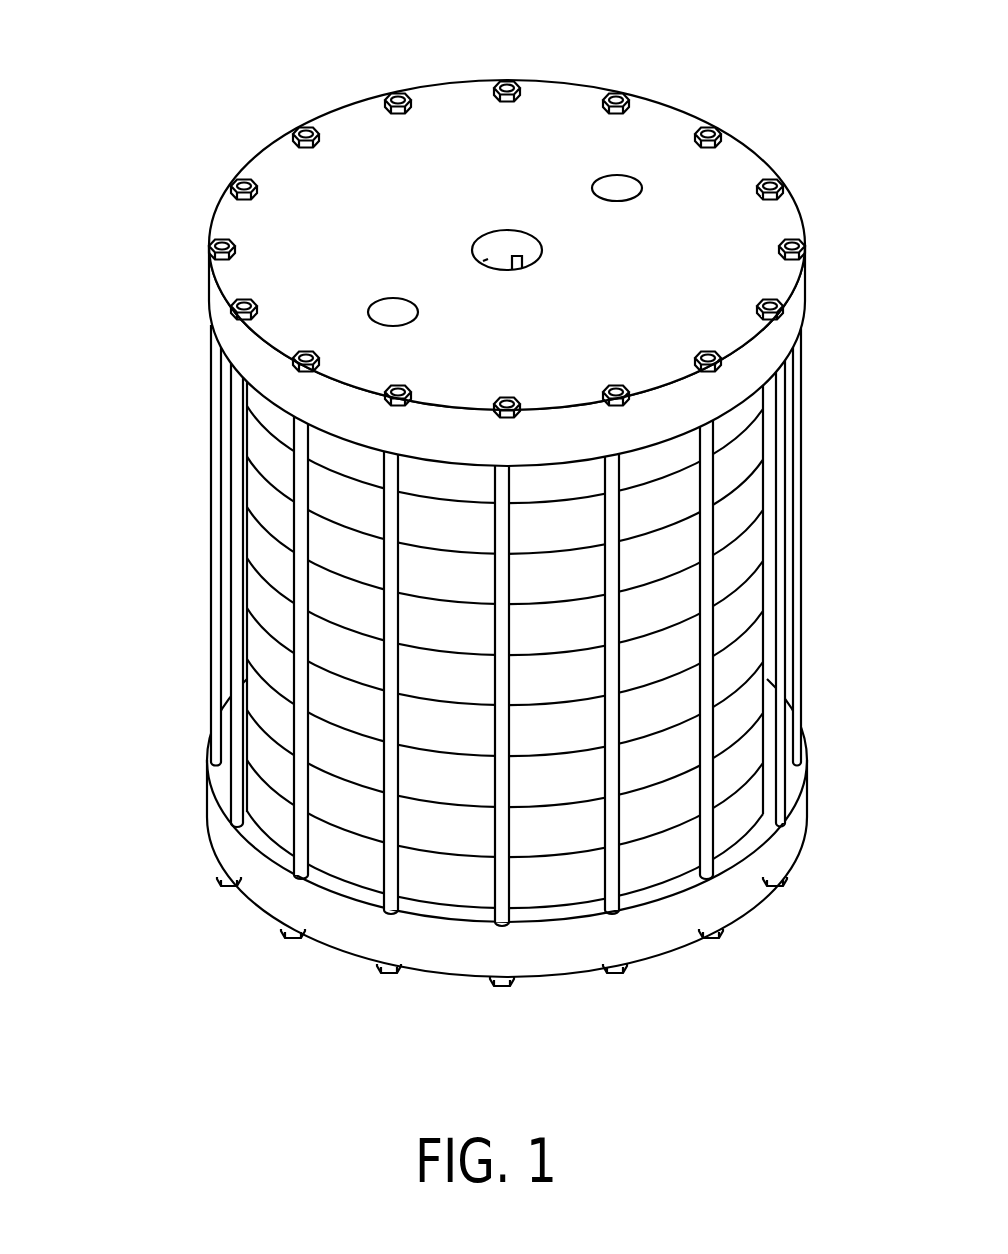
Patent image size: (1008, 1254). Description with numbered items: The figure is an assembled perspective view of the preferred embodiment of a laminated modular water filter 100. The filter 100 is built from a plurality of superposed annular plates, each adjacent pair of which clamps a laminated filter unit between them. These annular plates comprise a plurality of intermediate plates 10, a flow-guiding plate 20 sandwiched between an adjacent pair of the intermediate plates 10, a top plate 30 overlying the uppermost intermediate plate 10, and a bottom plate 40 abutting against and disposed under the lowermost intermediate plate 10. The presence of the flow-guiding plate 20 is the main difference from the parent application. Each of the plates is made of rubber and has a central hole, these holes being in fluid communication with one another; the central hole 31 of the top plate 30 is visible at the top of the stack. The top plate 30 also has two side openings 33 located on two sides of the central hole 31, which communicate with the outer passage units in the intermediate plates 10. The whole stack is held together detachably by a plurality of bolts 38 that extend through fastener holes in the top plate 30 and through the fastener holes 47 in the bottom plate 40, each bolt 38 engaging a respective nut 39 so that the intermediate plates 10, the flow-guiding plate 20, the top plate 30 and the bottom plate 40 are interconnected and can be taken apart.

The laminated modular water filter 100 is at (180, 760).
The intermediate plates 10 is at (287, 428).
The flow-guiding plate 20 is at (285, 470).
The top plate 30 is at (197, 299).
The central hole 31 is at (497, 245).
The side openings 33 is at (617, 186).
The bolts 38 is at (790, 490).
The nuts 39 is at (770, 879).
The bottom plate 40 is at (222, 845).
The fastener holes 47 is at (760, 826).